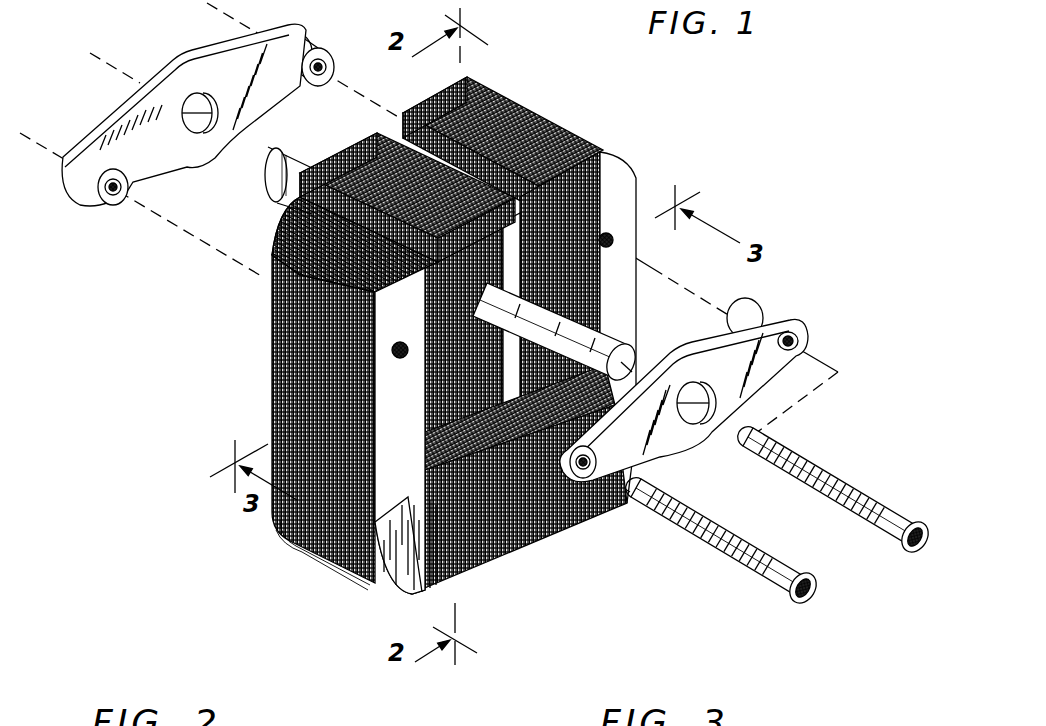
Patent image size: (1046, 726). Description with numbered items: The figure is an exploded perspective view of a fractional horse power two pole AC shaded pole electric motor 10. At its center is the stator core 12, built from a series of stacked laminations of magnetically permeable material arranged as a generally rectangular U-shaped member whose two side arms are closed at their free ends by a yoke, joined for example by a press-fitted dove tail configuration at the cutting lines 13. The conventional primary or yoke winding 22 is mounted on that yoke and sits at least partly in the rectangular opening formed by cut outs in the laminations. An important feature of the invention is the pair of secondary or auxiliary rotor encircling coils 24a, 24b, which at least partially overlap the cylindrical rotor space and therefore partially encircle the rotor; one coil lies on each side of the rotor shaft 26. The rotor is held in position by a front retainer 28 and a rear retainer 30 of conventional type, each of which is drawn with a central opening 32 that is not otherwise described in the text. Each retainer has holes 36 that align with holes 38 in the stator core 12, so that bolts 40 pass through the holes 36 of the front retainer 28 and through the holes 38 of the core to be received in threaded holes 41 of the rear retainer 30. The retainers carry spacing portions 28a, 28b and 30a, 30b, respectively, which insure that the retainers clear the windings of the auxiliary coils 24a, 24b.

The fractional horse power AC shaded pole electric motor 10 is at (477, 305).
The stator core 12 is at (297, 332).
The cutting lines 13 is at (346, 562).
The primary or yoke winding 22 is at (497, 560).
The auxiliary rotor encircling coil 24a is at (513, 123).
The auxiliary rotor encircling coil 24b is at (299, 183).
The shaft 26 is at (595, 333).
The front retainer 28 is at (687, 421).
The spacing portion 28a is at (557, 527).
The spacing portion 28b is at (760, 300).
The rear retainer 30 is at (204, 128).
The spacing portion 30a is at (87, 200).
The spacing portion 30b is at (333, 30).
The aperture 32 is at (198, 134).
The holes 36 is at (805, 346).
The holes 38 is at (398, 362).
The bolts 40 is at (698, 550).
The threaded holes 41 is at (321, 78).